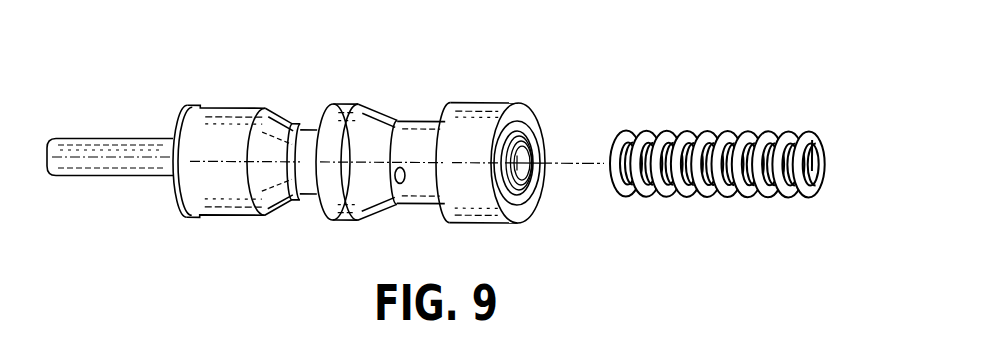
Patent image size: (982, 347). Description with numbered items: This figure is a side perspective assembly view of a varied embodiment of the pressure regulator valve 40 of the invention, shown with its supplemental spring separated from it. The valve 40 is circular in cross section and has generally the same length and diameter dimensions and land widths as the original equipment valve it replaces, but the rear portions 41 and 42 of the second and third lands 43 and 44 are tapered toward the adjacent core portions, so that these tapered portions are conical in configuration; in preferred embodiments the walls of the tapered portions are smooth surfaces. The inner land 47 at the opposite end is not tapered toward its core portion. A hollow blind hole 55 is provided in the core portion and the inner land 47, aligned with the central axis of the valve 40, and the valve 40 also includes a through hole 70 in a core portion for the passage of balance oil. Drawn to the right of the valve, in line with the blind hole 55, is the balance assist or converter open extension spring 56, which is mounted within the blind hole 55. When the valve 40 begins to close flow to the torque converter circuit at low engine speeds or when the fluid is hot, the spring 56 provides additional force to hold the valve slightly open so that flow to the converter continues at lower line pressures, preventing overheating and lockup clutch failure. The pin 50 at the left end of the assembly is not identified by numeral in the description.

The pressure regulator valve 40 is at (184, 221).
The rear portion of second land 41 is at (390, 118).
The rear portion of third land 42 is at (288, 125).
The second land 43 is at (352, 100).
The third land 44 is at (232, 132).
The inner land 47 is at (483, 107).
The contact pin 50 is at (107, 137).
The blind hole 55 is at (522, 148).
The converter open extension spring 56 is at (718, 130).
The through hole 70 is at (408, 182).